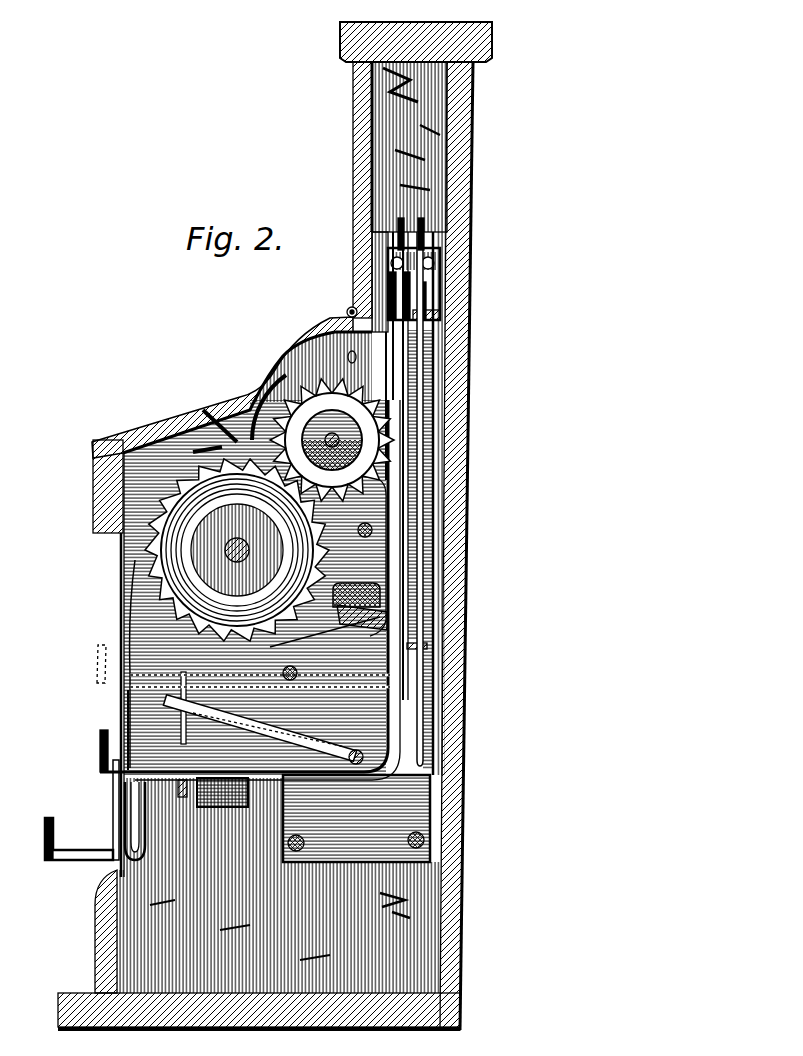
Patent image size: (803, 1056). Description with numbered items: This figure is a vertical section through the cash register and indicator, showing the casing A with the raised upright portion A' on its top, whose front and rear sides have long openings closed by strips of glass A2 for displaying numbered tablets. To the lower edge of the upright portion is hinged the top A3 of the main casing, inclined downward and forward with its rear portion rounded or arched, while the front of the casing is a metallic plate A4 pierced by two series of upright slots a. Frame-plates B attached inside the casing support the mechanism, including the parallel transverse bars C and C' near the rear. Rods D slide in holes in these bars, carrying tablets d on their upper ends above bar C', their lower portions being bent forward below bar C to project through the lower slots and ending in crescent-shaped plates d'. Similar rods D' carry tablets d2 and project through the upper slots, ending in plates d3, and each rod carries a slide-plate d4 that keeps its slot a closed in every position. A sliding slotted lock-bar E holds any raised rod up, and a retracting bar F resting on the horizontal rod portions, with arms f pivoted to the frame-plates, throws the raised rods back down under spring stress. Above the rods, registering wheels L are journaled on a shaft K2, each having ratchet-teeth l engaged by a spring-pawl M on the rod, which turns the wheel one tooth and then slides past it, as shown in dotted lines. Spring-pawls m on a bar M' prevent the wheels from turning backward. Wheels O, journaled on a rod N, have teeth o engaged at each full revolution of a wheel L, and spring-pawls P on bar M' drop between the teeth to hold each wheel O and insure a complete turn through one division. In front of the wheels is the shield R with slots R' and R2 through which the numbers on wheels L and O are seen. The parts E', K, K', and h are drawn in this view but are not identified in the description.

The casing or frame A is at (281, 961).
The casing upright portion A' is at (410, 468).
The cylinder or column of casing A2 is at (486, 165).
The curved cover of casing A3 is at (285, 340).
The side wall of casing A4 is at (120, 600).
The bracket B is at (440, 278).
The rod C is at (445, 466).
The plate C' is at (454, 313).
The rod D is at (443, 503).
The tube D' is at (222, 630).
The rod end d is at (432, 234).
The bar d' is at (35, 839).
The rod end d2 is at (404, 224).
The stud d3 is at (100, 752).
The slot d4 is at (120, 686).
The wall a is at (120, 714).
The rod E is at (168, 713).
The tube E' is at (178, 801).
The lever F is at (325, 762).
The rod f is at (290, 732).
The block K is at (178, 807).
The block K' is at (222, 811).
The hub K2 is at (247, 552).
The ratchet wheel L is at (230, 650).
The rim of wheel l is at (248, 508).
The lever M is at (103, 664).
The arm M' is at (362, 629).
The rod m is at (260, 652).
The star wheel N is at (332, 440).
The pivot o is at (328, 361).
The pin O is at (290, 674).
The block P is at (362, 580).
The wire h is at (388, 500).
The pawl R is at (216, 413).
The pawl R' is at (191, 423).
The pawl arm R2 is at (254, 425).